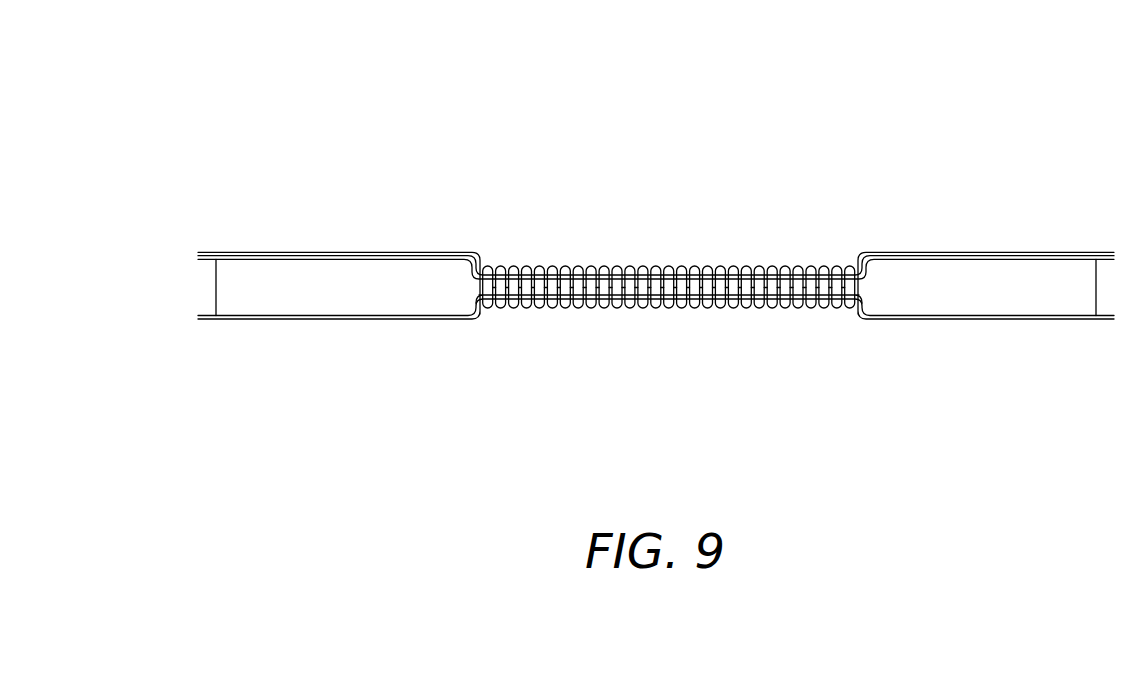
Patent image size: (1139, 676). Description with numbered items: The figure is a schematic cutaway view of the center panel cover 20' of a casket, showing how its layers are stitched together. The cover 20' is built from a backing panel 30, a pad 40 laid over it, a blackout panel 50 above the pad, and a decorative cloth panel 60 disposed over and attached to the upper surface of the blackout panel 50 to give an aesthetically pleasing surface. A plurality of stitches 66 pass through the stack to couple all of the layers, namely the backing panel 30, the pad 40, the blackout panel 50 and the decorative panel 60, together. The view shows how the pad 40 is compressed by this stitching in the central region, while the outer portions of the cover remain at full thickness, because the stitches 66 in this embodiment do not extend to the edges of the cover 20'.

The center panel cover 20' is at (656, 209).
The backing panel 30 is at (380, 321).
The pad 40 is at (270, 305).
The blackout panel 50 is at (302, 255).
The decorative cloth panel 60 is at (368, 253).
The stitches 66 is at (550, 268).